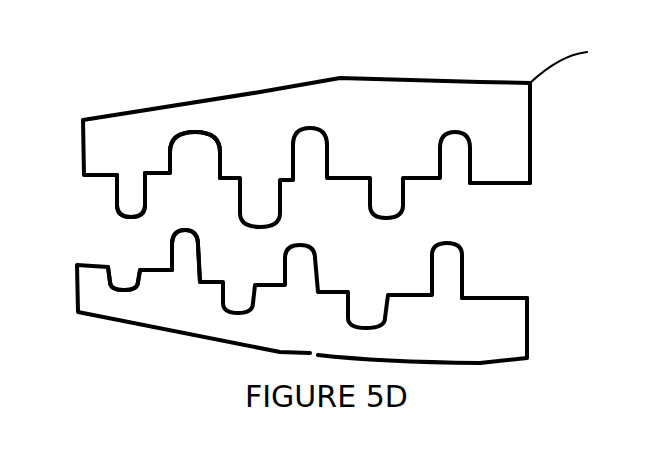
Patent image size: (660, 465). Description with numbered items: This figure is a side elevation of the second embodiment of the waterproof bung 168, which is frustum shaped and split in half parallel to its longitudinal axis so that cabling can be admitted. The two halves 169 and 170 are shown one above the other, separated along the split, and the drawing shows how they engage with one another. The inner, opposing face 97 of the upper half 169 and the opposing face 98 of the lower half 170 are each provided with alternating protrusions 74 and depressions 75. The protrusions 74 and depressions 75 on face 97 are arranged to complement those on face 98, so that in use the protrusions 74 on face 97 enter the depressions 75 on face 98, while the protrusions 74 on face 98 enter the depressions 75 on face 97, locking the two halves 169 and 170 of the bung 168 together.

The protrusions 74 is at (130, 185).
The depressions 75 is at (195, 152).
The opposing face 97 is at (530, 183).
The opposing face 98 is at (527, 298).
The waterproof bung 168 is at (520, 110).
The half of the bung 169 is at (507, 160).
The half of the bung 170 is at (507, 335).